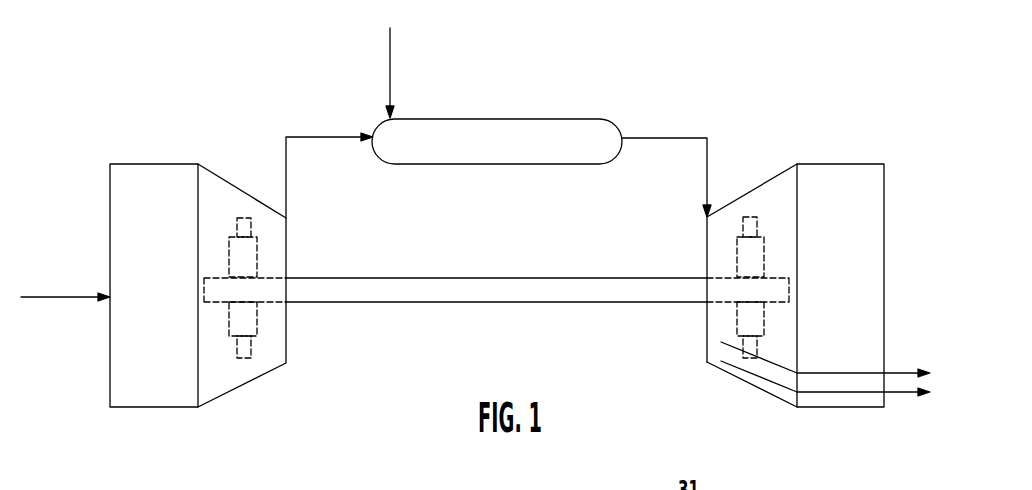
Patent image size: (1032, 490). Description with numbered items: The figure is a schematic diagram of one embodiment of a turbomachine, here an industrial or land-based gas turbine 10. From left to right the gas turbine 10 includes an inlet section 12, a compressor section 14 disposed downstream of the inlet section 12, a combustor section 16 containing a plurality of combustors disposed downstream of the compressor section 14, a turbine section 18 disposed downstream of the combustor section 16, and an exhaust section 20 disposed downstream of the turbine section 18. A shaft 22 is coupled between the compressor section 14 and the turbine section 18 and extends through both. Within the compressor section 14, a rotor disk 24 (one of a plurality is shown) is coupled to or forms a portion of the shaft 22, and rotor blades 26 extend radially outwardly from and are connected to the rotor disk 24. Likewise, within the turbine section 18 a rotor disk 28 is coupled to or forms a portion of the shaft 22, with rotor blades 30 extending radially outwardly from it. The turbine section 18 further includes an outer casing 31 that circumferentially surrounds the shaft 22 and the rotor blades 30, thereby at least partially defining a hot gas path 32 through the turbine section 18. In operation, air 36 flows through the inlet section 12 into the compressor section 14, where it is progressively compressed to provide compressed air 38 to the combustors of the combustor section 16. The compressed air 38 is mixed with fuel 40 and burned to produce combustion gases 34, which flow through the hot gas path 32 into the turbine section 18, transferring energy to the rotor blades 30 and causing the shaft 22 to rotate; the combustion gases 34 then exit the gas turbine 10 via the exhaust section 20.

The gas turbine 10 is at (322, 44).
The inlet section 12 is at (154, 164).
The compressor section 14 is at (217, 176).
The combustor section 16 is at (561, 119).
The turbine section 18 is at (768, 180).
The exhaust section 20 is at (862, 164).
The shaft 22 is at (443, 302).
The rotor disk 24 is at (257, 256).
The rotor blade 26 is at (245, 218).
The rotor disk 28 is at (737, 257).
The rotor blade 30 is at (745, 217).
The outer casing 31 is at (791, 407).
The hot gas path 32 is at (758, 394).
The combustion gases 34 is at (677, 139).
The air 36 is at (71, 298).
The compressed air 38 is at (315, 138).
The fuel 40 is at (392, 68).